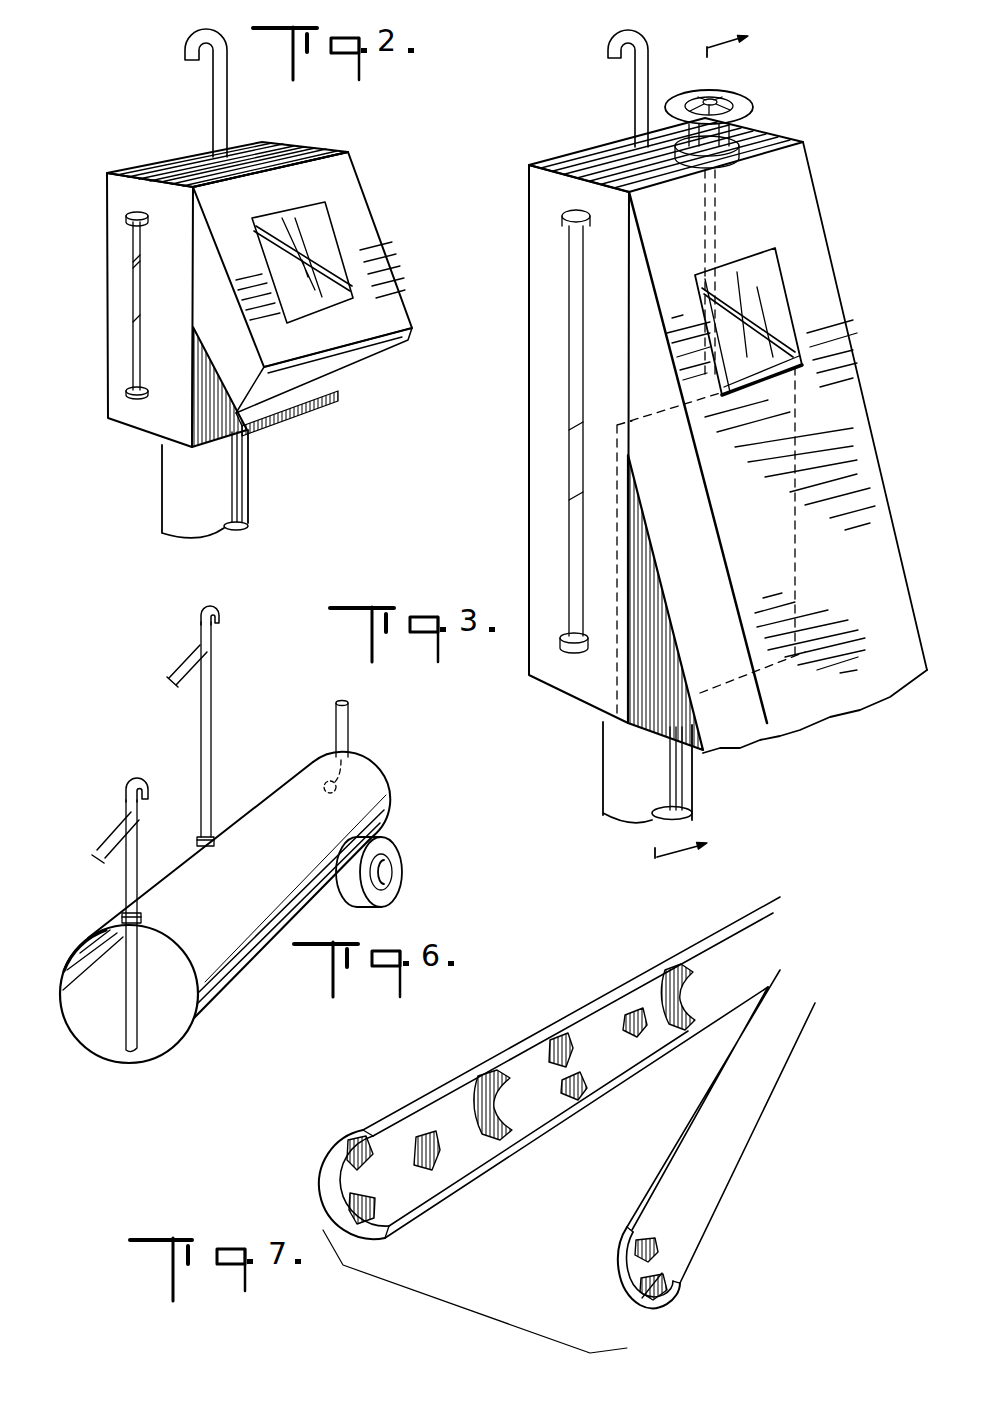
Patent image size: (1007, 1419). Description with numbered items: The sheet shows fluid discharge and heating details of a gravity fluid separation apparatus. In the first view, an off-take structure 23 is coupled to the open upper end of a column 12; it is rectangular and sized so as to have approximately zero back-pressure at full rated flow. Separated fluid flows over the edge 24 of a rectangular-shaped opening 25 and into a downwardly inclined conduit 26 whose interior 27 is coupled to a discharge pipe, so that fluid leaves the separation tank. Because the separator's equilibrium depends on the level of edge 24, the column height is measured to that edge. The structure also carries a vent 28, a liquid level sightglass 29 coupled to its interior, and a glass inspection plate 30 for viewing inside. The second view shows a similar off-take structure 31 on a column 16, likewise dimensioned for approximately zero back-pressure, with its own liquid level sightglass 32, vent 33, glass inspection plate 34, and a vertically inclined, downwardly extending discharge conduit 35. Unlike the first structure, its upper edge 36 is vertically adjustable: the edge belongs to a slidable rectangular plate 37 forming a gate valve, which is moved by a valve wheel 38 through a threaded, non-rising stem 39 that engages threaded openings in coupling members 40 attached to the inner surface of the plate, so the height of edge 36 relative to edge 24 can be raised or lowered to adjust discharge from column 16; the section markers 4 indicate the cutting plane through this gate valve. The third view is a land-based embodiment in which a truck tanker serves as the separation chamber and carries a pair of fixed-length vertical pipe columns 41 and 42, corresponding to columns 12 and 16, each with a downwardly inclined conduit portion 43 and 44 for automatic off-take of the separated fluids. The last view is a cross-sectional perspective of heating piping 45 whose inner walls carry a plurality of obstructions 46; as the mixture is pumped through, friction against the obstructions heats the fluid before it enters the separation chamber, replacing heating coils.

In FIG. 2, the column 12 is at (238, 477).
In FIG. 3, the column 16 is at (603, 784).
In FIG. 2, the off-take structure 23 is at (156, 150).
In FIG. 2, the edge 24 is at (198, 265).
In FIG. 2, the rectangular-shaped opening 25 is at (296, 191).
In FIG. 2, the downwardly inclined conduit 26 is at (387, 308).
In FIG. 2, the interior 27 is at (350, 368).
In FIG. 2, the vent 28 is at (228, 100).
In FIG. 2, the liquid level sightglass 29 is at (133, 322).
In FIG. 2, the glass inspection plate 30 is at (335, 287).
In FIG. 3, the off-take structure 31 is at (864, 290).
In FIG. 3, the liquid level sightglass 32 is at (568, 492).
In FIG. 3, the vent 33 is at (638, 40).
In FIG. 3, the glass inspection plate 34 is at (778, 323).
In FIG. 3, the discharge conduit 35 is at (860, 500).
In FIG. 3, the upper edge 36 is at (803, 358).
In FIG. 3, the rectangular plate 37 is at (613, 692).
In FIG. 3, the valve wheel 38 is at (752, 110).
In FIG. 3, the threaded, non-rising stem 39 is at (707, 280).
In FIG. 3, the section line 4- 4 is at (716, 438).
In FIG. 6, the coupling members 40 is at (298, 778).
In FIG. 6, the vertical column 41 is at (140, 842).
In FIG. 6, the vertical column 42 is at (207, 722).
In FIG. 6, the downwardly inclined conduit portion 43 is at (103, 840).
In FIG. 6, the downwardly inclined conduit portion 44 is at (180, 665).
In FIG. 7, the piping 45 is at (527, 1040).
In FIG. 7, the obstructions 46 is at (440, 1160).